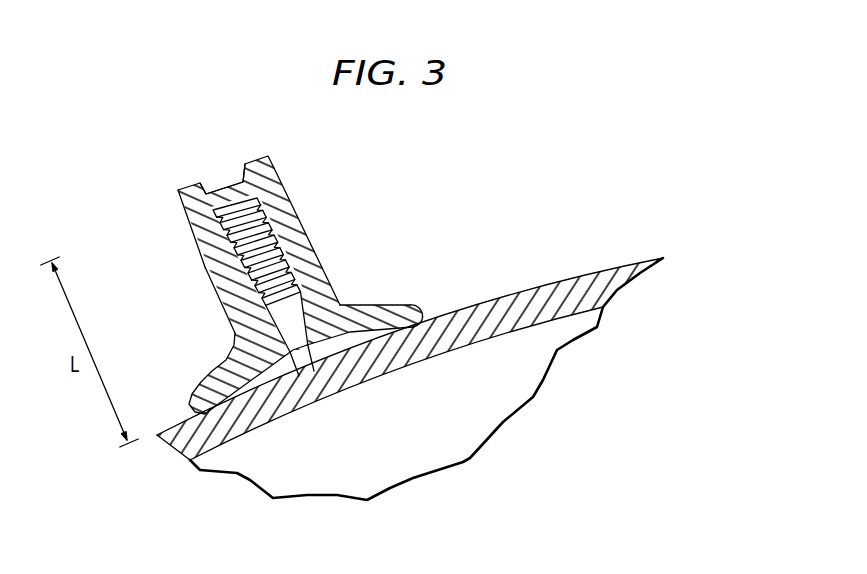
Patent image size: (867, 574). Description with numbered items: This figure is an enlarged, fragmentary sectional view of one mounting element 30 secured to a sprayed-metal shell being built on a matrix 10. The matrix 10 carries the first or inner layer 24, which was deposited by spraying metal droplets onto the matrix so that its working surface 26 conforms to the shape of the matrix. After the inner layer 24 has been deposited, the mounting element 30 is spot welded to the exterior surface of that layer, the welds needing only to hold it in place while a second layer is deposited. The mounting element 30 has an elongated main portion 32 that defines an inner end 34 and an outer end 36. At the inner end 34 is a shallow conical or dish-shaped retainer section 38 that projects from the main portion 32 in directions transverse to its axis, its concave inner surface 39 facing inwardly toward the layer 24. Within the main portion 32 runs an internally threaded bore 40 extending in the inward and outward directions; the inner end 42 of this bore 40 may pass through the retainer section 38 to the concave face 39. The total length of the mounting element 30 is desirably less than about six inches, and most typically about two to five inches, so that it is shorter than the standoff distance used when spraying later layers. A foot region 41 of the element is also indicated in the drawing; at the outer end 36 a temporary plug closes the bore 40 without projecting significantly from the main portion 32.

The matrix 10 is at (268, 458).
The inner layer 24 is at (410, 349).
The working surface 26 is at (522, 292).
The mounting element 30 is at (293, 280).
The main portion 32 is at (285, 280).
The inner end 34 is at (370, 284).
The outer end 36 is at (247, 152).
The retainer section 38 is at (390, 303).
The concave inner surface 39 is at (305, 358).
The bore 40 is at (220, 238).
The foot 41 is at (220, 368).
The inner end of bore 42 is at (258, 322).